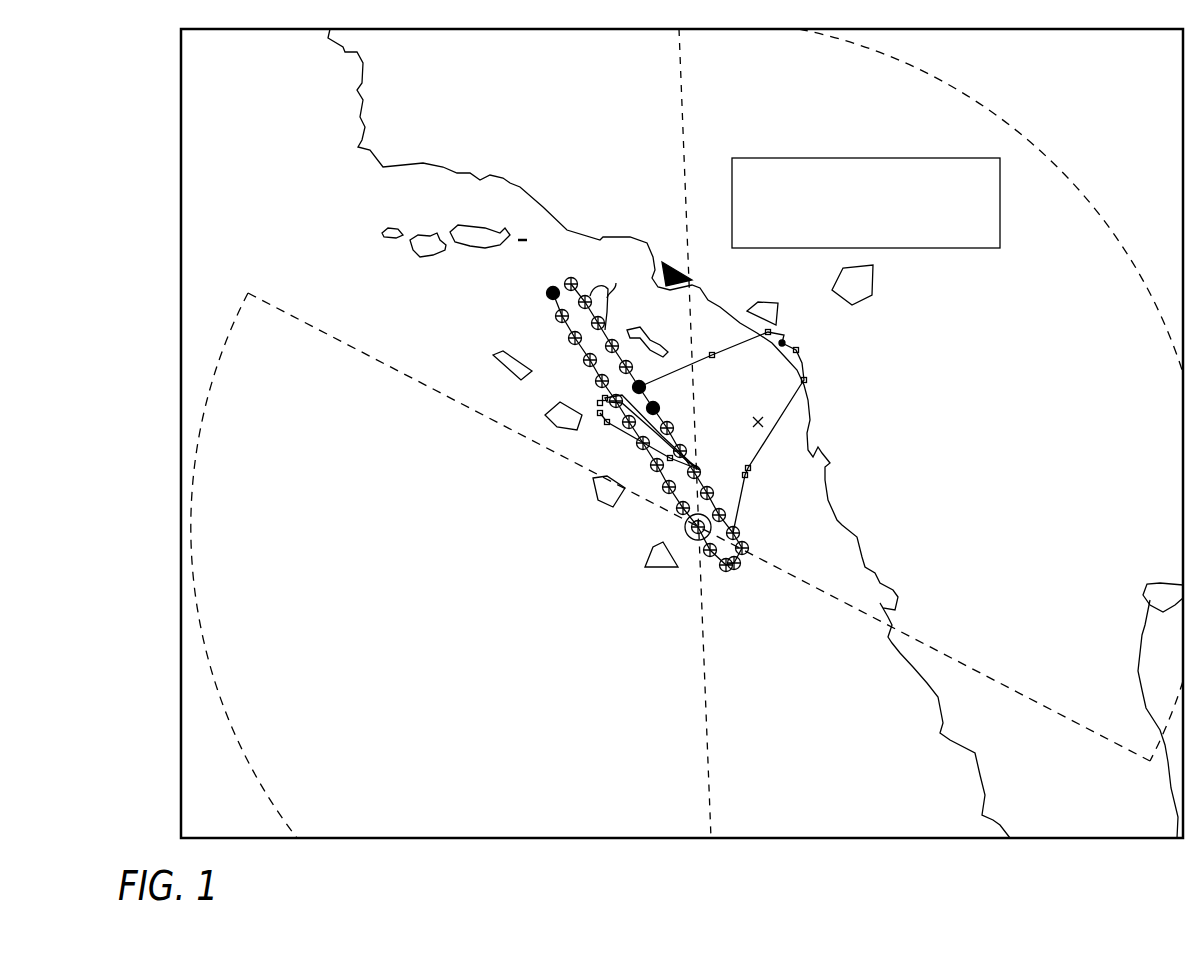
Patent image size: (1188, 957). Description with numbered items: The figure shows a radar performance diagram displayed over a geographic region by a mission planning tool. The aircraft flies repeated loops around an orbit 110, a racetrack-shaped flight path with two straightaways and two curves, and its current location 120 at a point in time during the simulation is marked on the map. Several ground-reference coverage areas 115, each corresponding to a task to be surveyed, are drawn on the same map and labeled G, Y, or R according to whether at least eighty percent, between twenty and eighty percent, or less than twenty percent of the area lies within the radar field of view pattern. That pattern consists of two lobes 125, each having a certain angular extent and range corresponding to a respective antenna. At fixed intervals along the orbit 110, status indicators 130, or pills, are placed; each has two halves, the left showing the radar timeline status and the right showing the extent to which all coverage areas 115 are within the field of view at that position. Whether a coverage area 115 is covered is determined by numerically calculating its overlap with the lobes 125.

The orbit 110 is at (560, 318).
The ground-reference coverage area 115 is at (496, 378).
The current location of the aircraft 120 is at (686, 526).
The lobes 125 is at (368, 352).
The status indicator 130 is at (616, 283).